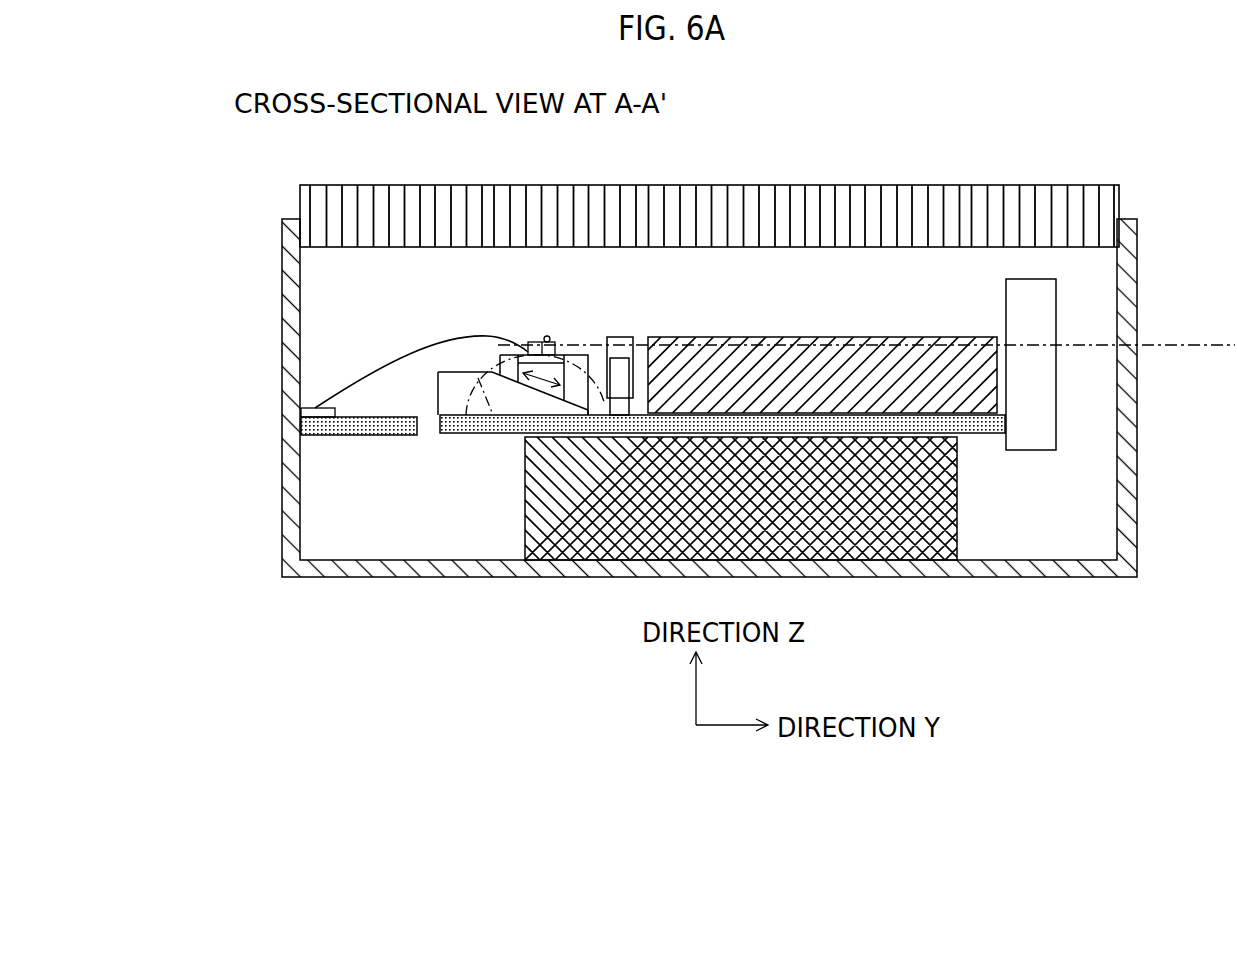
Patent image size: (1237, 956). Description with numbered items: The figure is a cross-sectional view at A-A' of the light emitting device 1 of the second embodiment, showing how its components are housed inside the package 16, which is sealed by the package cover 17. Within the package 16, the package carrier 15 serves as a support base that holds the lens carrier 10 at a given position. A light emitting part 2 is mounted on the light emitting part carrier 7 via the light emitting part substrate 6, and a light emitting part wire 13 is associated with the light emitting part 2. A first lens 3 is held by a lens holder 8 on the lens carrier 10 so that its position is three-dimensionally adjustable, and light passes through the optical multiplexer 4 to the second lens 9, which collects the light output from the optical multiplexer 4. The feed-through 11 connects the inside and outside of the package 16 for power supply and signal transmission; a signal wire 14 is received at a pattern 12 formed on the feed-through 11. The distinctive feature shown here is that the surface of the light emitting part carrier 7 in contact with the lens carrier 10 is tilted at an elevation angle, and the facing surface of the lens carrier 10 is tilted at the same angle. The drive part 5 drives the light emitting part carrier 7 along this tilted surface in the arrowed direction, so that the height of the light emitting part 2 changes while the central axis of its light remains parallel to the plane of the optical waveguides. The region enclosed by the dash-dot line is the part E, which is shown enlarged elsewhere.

The light emitting device 1 is at (901, 156).
The light emitting part 2 is at (521, 355).
The first lens 3 is at (623, 338).
The optical multiplexer 4 is at (886, 337).
The drive part 5 is at (505, 355).
The light emitting part substrate 6 is at (566, 356).
The light emitting part carrier 7 is at (557, 358).
The lens holder 8 is at (620, 360).
The second lens 9 is at (1058, 305).
The lens carrier 10 is at (457, 437).
The feed-through 11 is at (372, 436).
The pattern 12 is at (311, 408).
The light emitting part wire 13 is at (545, 337).
The signal wire 14 is at (408, 368).
The package carrier 15 is at (958, 516).
The package 16 is at (281, 247).
The package cover 17 is at (1120, 200).
The part E is at (485, 362).